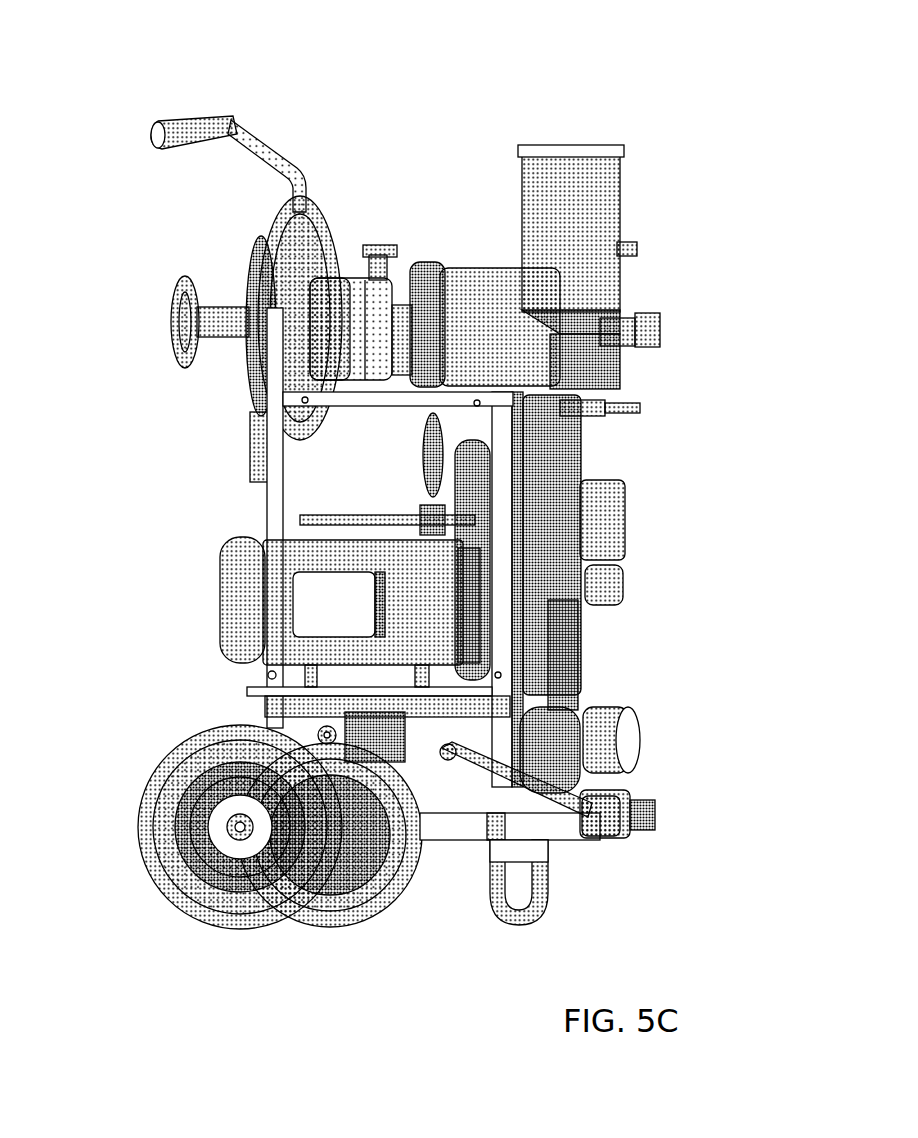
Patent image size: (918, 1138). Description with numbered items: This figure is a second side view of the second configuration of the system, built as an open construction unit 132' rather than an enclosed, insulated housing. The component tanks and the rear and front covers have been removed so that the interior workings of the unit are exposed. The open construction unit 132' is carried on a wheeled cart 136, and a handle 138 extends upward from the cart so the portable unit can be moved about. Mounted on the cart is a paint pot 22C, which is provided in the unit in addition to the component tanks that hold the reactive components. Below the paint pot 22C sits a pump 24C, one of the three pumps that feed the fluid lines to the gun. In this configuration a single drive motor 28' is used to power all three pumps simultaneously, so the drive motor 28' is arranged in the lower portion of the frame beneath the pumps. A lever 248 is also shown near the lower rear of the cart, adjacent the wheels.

The handle 138 is at (175, 116).
The paint pot 22C is at (578, 145).
The pump 24C is at (490, 280).
The single drive motor 28' is at (301, 612).
The wheeled cart 136 is at (135, 790).
The open construction unit 132' is at (524, 616).
The lever 248 is at (468, 790).